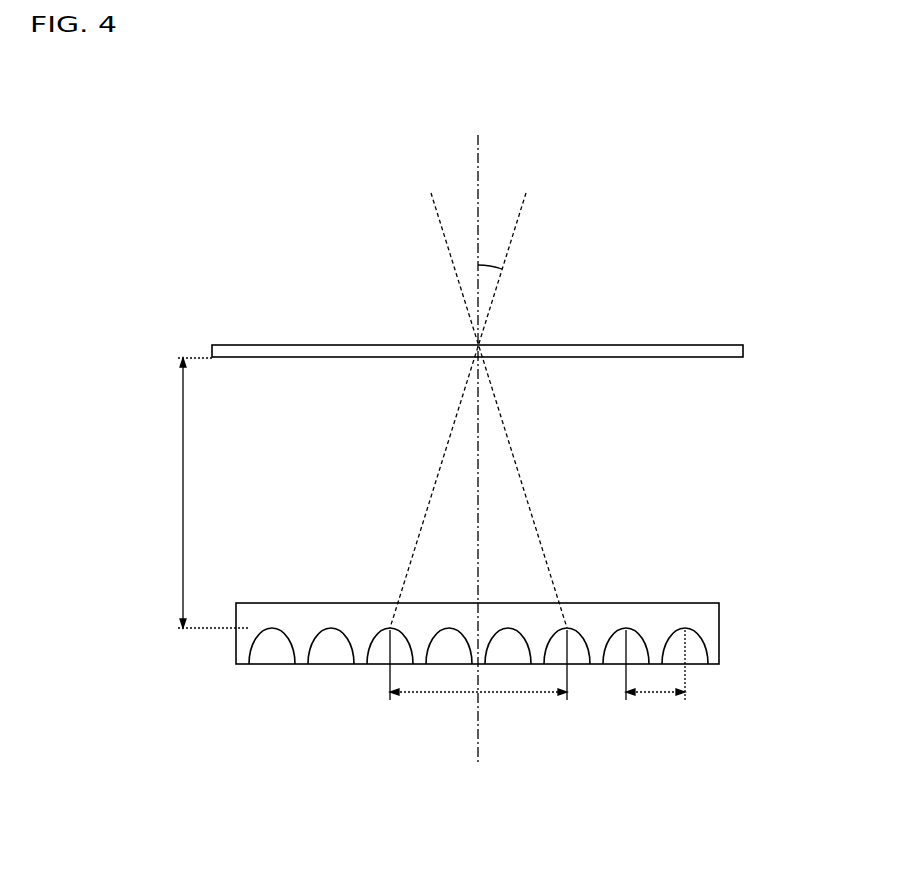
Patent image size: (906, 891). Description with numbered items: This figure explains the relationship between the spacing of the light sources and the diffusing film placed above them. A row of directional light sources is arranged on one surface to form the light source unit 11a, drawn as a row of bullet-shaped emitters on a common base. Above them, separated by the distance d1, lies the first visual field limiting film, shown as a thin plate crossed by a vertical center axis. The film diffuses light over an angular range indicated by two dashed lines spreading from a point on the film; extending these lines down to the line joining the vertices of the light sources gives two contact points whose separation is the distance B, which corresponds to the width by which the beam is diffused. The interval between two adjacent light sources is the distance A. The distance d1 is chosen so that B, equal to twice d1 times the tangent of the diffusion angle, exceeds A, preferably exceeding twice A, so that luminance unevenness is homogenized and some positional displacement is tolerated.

The light source unit 11a is at (719, 630).
The distance d1 is at (204, 493).
The distance between two contact points B is at (478, 674).
The interval between adjacent light sources A is at (655, 674).